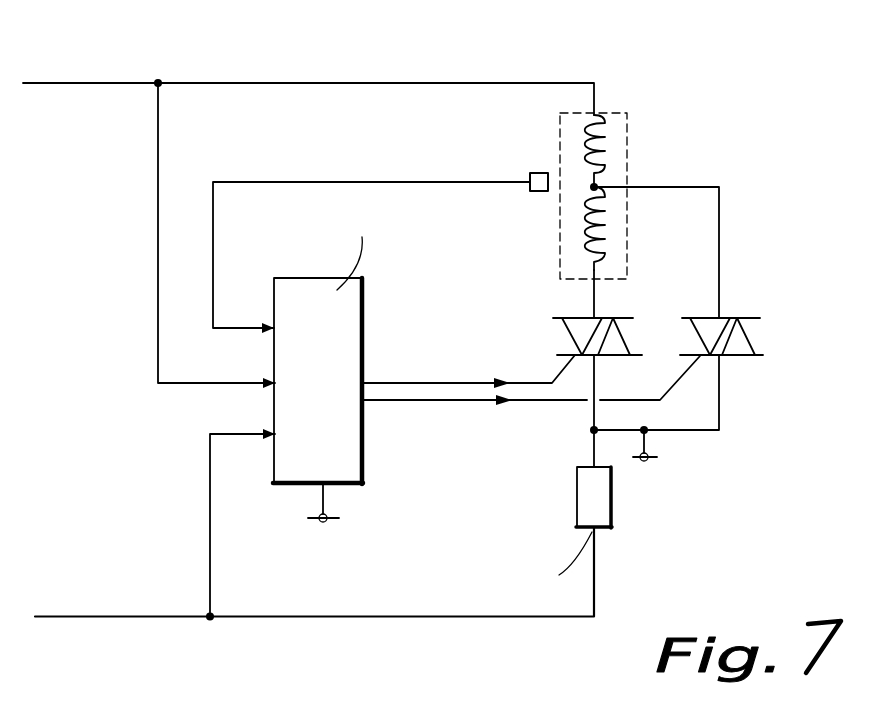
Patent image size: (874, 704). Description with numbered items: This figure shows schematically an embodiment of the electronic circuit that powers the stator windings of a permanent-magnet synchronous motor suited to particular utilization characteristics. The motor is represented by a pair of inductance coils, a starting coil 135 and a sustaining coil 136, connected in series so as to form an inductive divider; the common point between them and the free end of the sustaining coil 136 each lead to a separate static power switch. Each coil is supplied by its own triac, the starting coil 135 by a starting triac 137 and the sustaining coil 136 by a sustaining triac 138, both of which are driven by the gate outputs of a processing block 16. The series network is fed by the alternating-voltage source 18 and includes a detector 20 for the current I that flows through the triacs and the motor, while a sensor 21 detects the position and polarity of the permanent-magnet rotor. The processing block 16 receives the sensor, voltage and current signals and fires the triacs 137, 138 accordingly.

The processing block 16 is at (352, 313).
The alternating-voltage source 18 is at (646, 461).
The detector 20 is at (597, 508).
The sensor 21 is at (538, 173).
The starting coil 135 is at (605, 153).
The sustaining coil 136 is at (583, 250).
The starting triac 137 is at (725, 357).
The sustaining triac 138 is at (585, 357).